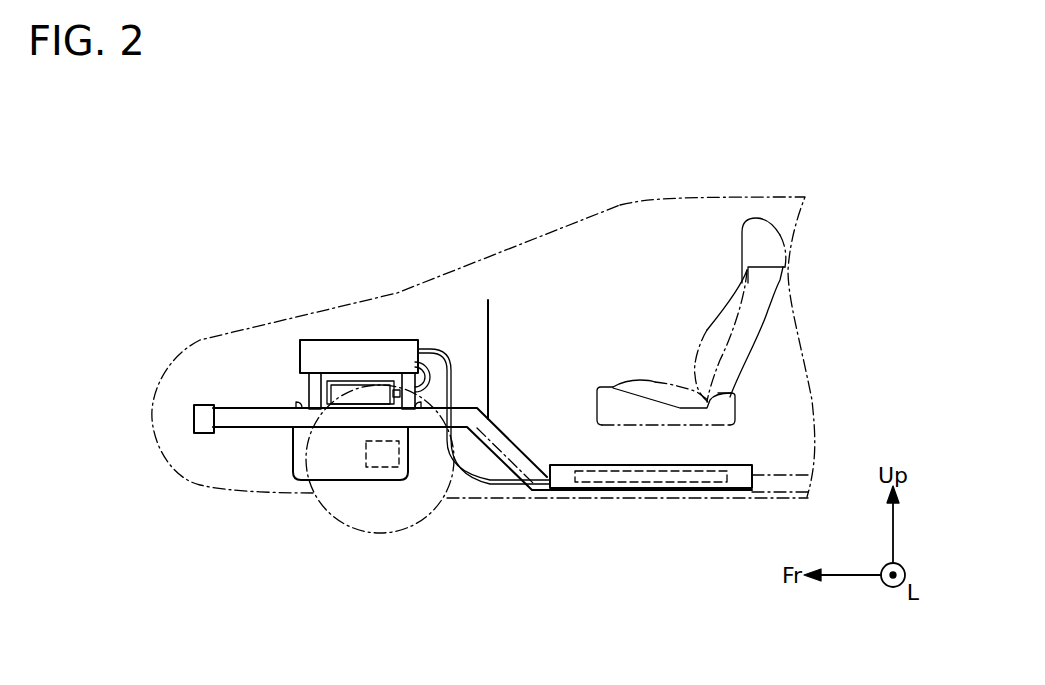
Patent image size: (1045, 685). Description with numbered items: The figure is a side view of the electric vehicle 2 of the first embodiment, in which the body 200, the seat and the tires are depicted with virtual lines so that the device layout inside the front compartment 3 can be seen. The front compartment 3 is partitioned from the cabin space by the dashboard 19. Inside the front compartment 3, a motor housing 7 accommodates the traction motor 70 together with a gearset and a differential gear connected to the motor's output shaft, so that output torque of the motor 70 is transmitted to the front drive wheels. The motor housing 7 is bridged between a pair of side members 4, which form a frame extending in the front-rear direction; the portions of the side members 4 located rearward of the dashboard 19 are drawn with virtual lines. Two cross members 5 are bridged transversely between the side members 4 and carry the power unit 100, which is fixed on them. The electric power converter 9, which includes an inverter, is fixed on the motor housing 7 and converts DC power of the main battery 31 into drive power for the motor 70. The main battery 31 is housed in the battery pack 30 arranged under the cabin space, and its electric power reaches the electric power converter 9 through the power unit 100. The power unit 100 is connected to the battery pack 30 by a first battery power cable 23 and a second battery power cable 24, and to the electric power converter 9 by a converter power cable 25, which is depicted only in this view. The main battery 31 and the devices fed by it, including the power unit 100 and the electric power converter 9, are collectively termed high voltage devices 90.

The electric vehicle 2 is at (191, 163).
The front compartment 3 is at (195, 425).
The side members 4 is at (247, 420).
The cross members 5 is at (317, 383).
The motor housing 7 is at (302, 458).
The electric power converter 9 is at (377, 388).
The high voltage devices 90 is at (360, 394).
The dashboard 19 is at (490, 332).
The first battery power cable 23 is at (497, 487).
The second battery power cable 24 is at (484, 416).
The converter power cable 25 is at (398, 381).
The battery pack 30 is at (733, 480).
The main battery 31 is at (650, 483).
The traction motor 70 is at (380, 466).
The power unit 100 is at (365, 352).
The body 200 is at (722, 197).